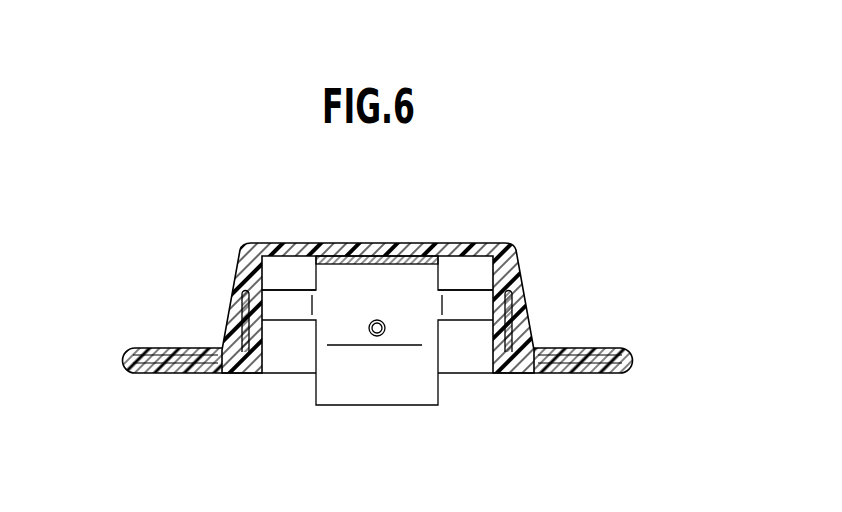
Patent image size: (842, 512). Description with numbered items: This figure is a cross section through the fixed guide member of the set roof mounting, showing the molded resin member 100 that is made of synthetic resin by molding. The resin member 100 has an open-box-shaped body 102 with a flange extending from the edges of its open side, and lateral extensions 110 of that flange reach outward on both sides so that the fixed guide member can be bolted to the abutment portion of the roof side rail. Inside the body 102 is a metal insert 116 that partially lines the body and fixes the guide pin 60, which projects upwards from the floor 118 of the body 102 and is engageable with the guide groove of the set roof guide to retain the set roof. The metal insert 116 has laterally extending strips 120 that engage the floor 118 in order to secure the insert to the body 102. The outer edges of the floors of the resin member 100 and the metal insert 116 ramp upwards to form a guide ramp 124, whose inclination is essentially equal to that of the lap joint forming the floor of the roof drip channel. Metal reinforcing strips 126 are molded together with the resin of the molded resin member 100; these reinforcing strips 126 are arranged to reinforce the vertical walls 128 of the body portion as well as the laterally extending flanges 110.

The molded resin member 100 is at (412, 281).
The open-box-shaped body 102 is at (381, 250).
The lateral extensions of flange 110 is at (371, 386).
The metal insert 116 is at (340, 283).
The floor of the body 118 is at (282, 365).
The laterally extending strips 120 is at (272, 303).
The guide ramp 124 is at (373, 395).
The metal reinforcing strips 126 is at (188, 368).
The vertical walls 128 is at (235, 300).
The guide pin 60 is at (384, 321).